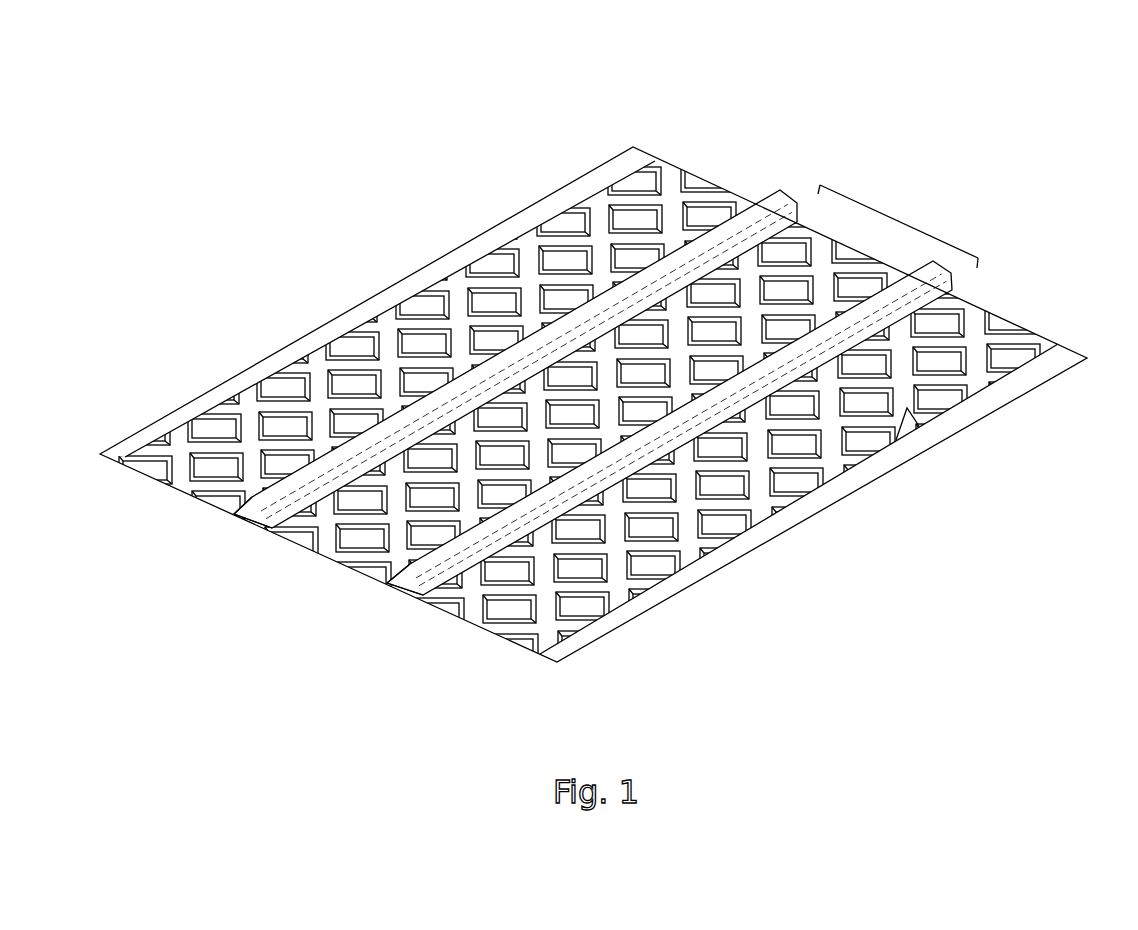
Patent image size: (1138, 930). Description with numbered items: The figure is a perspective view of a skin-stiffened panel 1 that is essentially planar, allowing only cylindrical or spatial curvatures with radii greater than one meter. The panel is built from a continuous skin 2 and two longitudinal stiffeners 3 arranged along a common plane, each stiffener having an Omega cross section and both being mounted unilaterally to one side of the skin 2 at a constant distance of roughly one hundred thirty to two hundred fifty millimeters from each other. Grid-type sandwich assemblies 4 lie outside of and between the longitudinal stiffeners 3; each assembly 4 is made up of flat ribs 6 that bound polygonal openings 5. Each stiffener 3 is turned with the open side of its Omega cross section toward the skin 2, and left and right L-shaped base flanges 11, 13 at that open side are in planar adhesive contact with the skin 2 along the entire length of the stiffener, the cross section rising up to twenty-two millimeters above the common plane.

The skin-stiffened panel 1 is at (386, 223).
The continuous skin 2 is at (790, 538).
The longitudinal stiffener 3 is at (785, 183).
The grid-type sandwich assembly 4 is at (896, 217).
The polygonal opening 5 is at (948, 362).
The flat rib 6 is at (913, 418).
The left L-shaped base flange 11 is at (268, 533).
The right L-shaped base flange 13 is at (242, 512).